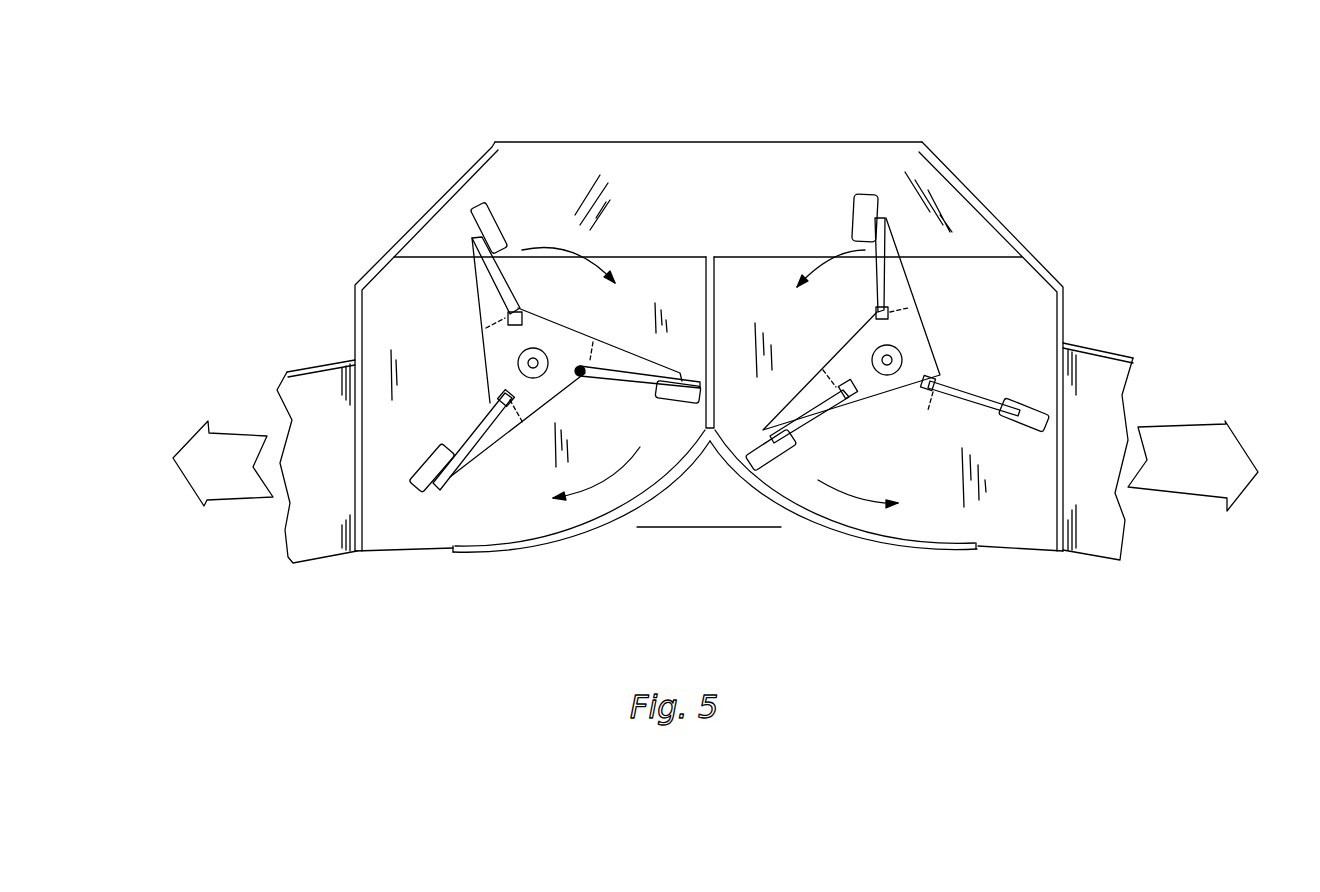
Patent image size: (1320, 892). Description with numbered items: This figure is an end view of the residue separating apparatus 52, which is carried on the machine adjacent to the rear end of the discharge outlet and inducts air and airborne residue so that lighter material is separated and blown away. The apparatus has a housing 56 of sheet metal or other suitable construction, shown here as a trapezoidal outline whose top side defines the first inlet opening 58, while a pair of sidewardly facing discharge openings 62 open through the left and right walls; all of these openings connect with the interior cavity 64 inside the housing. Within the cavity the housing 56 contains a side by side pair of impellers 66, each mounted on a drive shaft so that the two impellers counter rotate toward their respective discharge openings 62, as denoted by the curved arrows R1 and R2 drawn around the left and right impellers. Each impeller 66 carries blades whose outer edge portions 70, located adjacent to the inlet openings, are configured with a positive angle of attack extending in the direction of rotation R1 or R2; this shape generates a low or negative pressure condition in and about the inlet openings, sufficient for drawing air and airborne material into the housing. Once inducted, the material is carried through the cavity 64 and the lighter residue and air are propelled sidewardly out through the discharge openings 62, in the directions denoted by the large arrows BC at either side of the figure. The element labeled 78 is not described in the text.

The residue separating apparatus 52 is at (993, 95).
The housing 56 is at (962, 182).
The first inlet opening 58 is at (653, 160).
The discharge openings 62 is at (307, 525).
The interior cavity 64 is at (733, 277).
The impellers 66 is at (480, 340).
The outer edge portions 70 is at (498, 215).
The liner 78 is at (303, 368).
The arrows BC is at (245, 427).
The arrow R1 is at (587, 493).
The arrow R2 is at (845, 497).